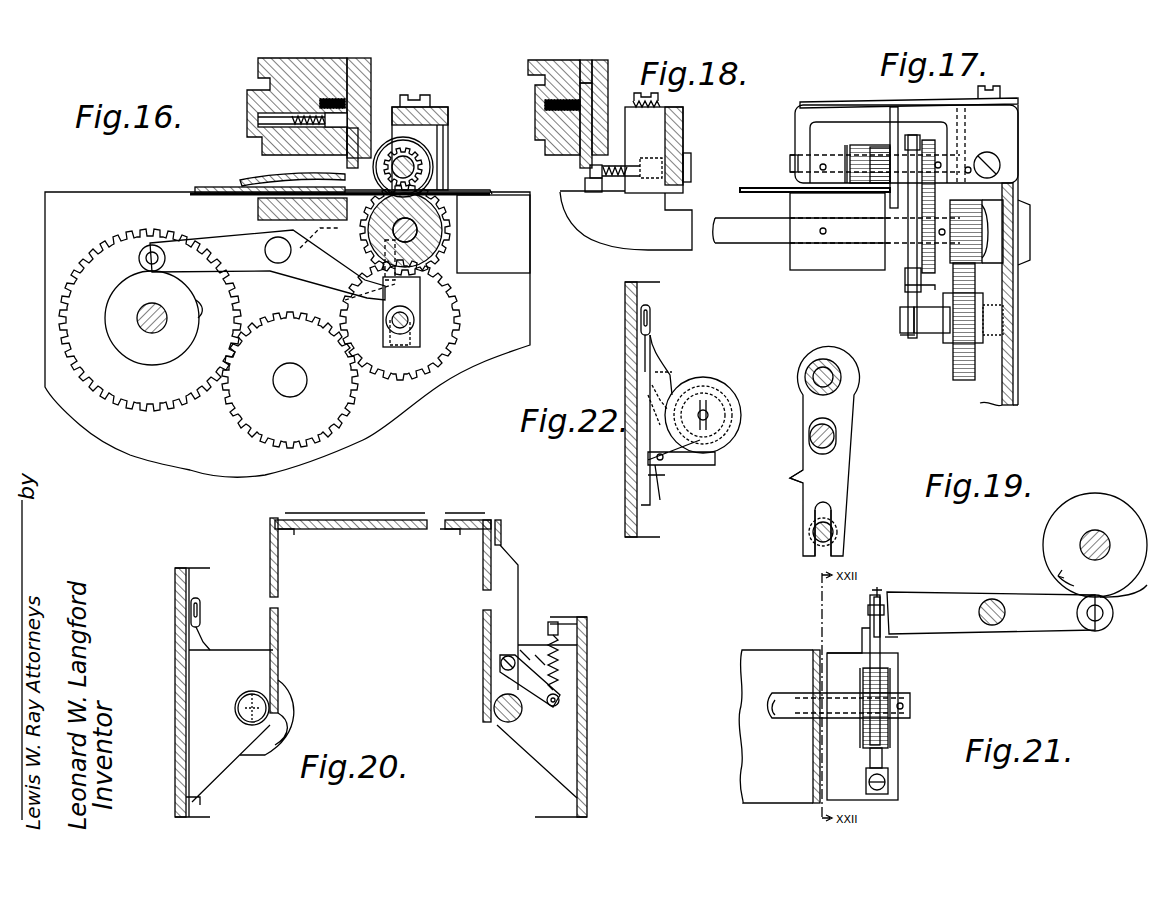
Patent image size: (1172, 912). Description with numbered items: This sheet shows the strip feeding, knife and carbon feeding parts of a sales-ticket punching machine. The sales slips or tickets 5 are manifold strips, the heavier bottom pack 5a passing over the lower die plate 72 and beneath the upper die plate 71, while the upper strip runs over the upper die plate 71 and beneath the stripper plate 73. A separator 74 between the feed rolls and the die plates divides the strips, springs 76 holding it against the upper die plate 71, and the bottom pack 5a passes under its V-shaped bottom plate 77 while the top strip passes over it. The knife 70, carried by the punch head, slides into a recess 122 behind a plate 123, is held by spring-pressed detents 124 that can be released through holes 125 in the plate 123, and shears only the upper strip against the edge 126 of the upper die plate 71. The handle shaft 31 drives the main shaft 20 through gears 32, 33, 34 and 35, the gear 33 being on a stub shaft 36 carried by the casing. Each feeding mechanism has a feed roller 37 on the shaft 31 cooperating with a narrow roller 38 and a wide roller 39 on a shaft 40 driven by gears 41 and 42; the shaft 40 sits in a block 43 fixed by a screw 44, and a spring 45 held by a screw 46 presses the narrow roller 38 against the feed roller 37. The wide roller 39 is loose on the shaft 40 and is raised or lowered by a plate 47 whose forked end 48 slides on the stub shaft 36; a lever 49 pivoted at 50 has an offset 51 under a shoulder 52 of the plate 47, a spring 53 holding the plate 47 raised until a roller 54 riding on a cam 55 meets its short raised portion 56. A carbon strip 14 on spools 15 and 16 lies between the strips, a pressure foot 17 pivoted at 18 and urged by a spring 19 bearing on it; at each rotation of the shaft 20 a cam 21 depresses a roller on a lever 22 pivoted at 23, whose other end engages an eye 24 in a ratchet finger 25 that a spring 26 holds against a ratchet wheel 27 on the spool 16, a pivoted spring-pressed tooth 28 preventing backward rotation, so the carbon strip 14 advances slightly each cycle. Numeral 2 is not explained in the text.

In FIG. 20, the channel member 2 is at (360, 530).
In FIG. 16, the sales slips or tickets 5 is at (204, 191).
In FIG. 20, the sales slips or tickets 5 is at (410, 517).
In FIG. 16, the bottom pack 5a is at (488, 194).
In FIG. 20, the bottom pack 5a is at (443, 530).
In FIG. 20, the carbon strip 14 is at (270, 538).
In FIG. 20, the supply spool 15 is at (500, 718).
In FIG. 20, the spool 16 is at (238, 712).
In FIG. 21, the spool 16 is at (788, 716).
In FIG. 20, the pressure foot 17 is at (502, 532).
In FIG. 20, the pivot 18 is at (500, 670).
In FIG. 20, the spring 19 is at (560, 668).
In FIG. 16, the shaft 20 is at (158, 330).
In FIG. 21, the shaft 20 is at (1080, 545).
In FIG. 21, the cam 21 is at (1065, 516).
In FIG. 21, the lever 22 is at (1048, 626).
In FIG. 21, the pivot 23 is at (996, 624).
In FIG. 22, the eye 24 is at (650, 310).
In FIG. 20, the eye 24 is at (205, 600).
In FIG. 22, the ratchet finger 25 is at (658, 356).
In FIG. 20, the ratchet finger 25 is at (210, 630).
In FIG. 21, the ratchet finger 25 is at (882, 662).
In FIG. 22, the spring 26 is at (666, 376).
In FIG. 22, the ratchet wheel 27 is at (725, 388).
In FIG. 21, the ratchet wheel 27 is at (888, 690).
In FIG. 22, the pivoted spring pressed tooth 28 is at (716, 460).
In FIG. 21, the pivoted spring pressed tooth 28 is at (890, 752).
In FIG. 16, the shaft 31 is at (418, 233).
In FIG. 17, the shaft 31 is at (772, 238).
In FIG. 19, the shaft 31 is at (836, 436).
In FIG. 16, the gear 32 is at (365, 224).
In FIG. 17, the gear 32 is at (1000, 232).
In FIG. 16, the gear 33 is at (450, 325).
In FIG. 17, the gear 33 is at (953, 360).
In FIG. 16, the gear 34 is at (340, 392).
In FIG. 16, the gear 35 is at (158, 390).
In FIG. 16, the stub shaft 36 is at (404, 334).
In FIG. 17, the stub shaft 36 is at (900, 318).
In FIG. 19, the stub shaft 36 is at (812, 534).
In FIG. 17, the feed roller 37 is at (832, 262).
In FIG. 17, the narrow roller 38 is at (847, 150).
In FIG. 16, the wide roller 39 is at (416, 167).
In FIG. 17, the wide roller 39 is at (882, 148).
In FIG. 19, the wide roller 39 is at (808, 372).
In FIG. 17, the shaft 40 is at (790, 162).
In FIG. 19, the shaft 40 is at (842, 378).
In FIG. 16, the gear 41 is at (368, 246).
In FIG. 17, the gear 41 is at (920, 257).
In FIG. 16, the gear 42 is at (448, 138).
In FIG. 17, the gear 42 is at (940, 146).
In FIG. 18, the block 43 is at (683, 136).
In FIG. 17, the block 43 is at (1012, 128).
In FIG. 18, the screw 44 is at (688, 172).
In FIG. 17, the screw 44 is at (1000, 158).
In FIG. 18, the spring 45 is at (634, 90).
In FIG. 17, the spring 45 is at (868, 102).
In FIG. 18, the screw 46 is at (660, 102).
In FIG. 17, the screw 46 is at (1000, 88).
In FIG. 16, the plate 47 is at (383, 300).
In FIG. 17, the plate 47 is at (908, 285).
In FIG. 19, the plate 47 is at (840, 468).
In FIG. 16, the forked end 48 is at (392, 340).
In FIG. 17, the forked end 48 is at (910, 338).
In FIG. 19, the forked end 48 is at (834, 540).
In FIG. 16, the lever 49 is at (210, 232).
In FIG. 17, the lever 49 is at (918, 290).
In FIG. 16, the pivot 50 is at (265, 250).
In FIG. 16, the offset 51 is at (383, 298).
In FIG. 17, the offset 51 is at (905, 275).
In FIG. 19, the shoulder 52 is at (790, 480).
In FIG. 16, the spring 53 is at (455, 262).
In FIG. 16, the roller 54 is at (150, 246).
In FIG. 16, the cam 55 is at (108, 320).
In FIG. 16, the raised portion 56 is at (198, 310).
In FIG. 16, the knife 70 is at (348, 170).
In FIG. 18, the knife 70 is at (580, 160).
In FIG. 16, the upper die plate 71 is at (260, 194).
In FIG. 16, the lower die plate 72 is at (258, 208).
In FIG. 16, the stripper plate 73 is at (270, 181).
In FIG. 16, the separator 74 is at (395, 142).
In FIG. 18, the separator 74 is at (585, 184).
In FIG. 18, the springs 76 is at (655, 172).
In FIG. 18, the bottom plate 77 is at (620, 191).
In FIG. 16, the recess 122 is at (350, 66).
In FIG. 18, the recess 122 is at (584, 70).
In FIG. 16, the plate 123 is at (392, 52).
In FIG. 18, the plate 123 is at (600, 80).
In FIG. 16, the spring-pressed detents 124 is at (310, 145).
In FIG. 16, the holes 125 is at (368, 110).
In FIG. 16, the edge 126 is at (306, 216).